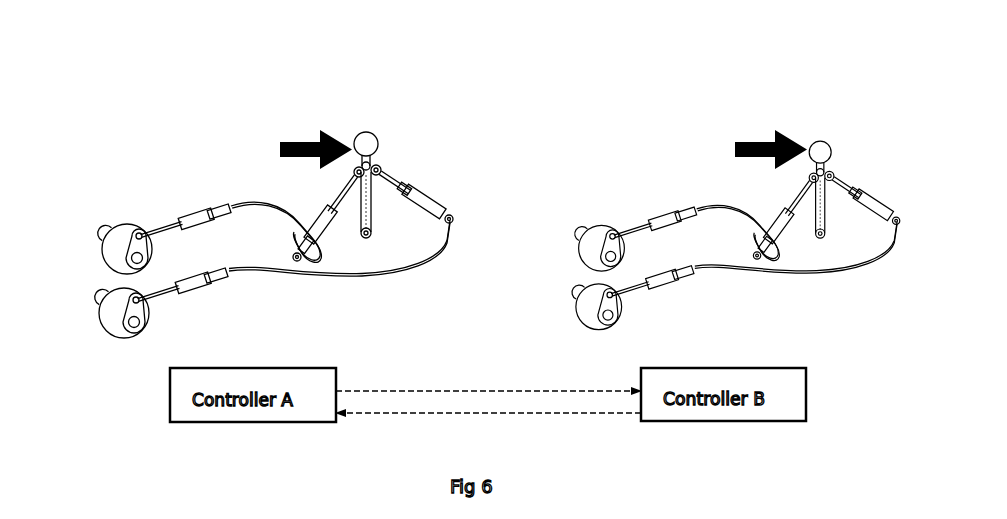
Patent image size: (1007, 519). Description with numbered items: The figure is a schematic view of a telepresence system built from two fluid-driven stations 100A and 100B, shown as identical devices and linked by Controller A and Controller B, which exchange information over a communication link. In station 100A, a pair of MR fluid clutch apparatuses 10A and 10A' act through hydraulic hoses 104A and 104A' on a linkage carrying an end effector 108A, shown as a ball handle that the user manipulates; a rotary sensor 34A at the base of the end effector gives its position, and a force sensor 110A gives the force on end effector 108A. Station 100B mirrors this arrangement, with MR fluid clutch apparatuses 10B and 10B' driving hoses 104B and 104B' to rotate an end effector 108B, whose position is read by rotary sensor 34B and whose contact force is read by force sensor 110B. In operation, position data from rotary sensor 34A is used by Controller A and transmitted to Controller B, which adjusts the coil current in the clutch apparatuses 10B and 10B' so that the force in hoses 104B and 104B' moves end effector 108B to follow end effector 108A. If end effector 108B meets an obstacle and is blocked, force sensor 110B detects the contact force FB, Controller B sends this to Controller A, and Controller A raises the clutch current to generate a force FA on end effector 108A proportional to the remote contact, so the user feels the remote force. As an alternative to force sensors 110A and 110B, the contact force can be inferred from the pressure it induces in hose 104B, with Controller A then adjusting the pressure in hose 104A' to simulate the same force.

The station 100A is at (168, 107).
The station 100B is at (648, 104).
The MR fluid clutch apparatus 10A is at (149, 228).
The MR fluid clutch apparatus 10A' is at (129, 303).
The MR fluid clutch apparatus 10B is at (616, 232).
The MR fluid clutch apparatus 10B' is at (597, 298).
The hydraulic hose 104A is at (276, 218).
The hydraulic hose 104A' is at (339, 270).
The hydraulic hose 104B is at (732, 221).
The hydraulic hose 104B' is at (796, 271).
The end effector 108A is at (372, 126).
The end effector 108B is at (828, 141).
The force sensor 110A is at (380, 140).
The force sensor 110B is at (833, 153).
The rotary sensor 34A is at (372, 239).
The rotary sensor 34B is at (827, 241).